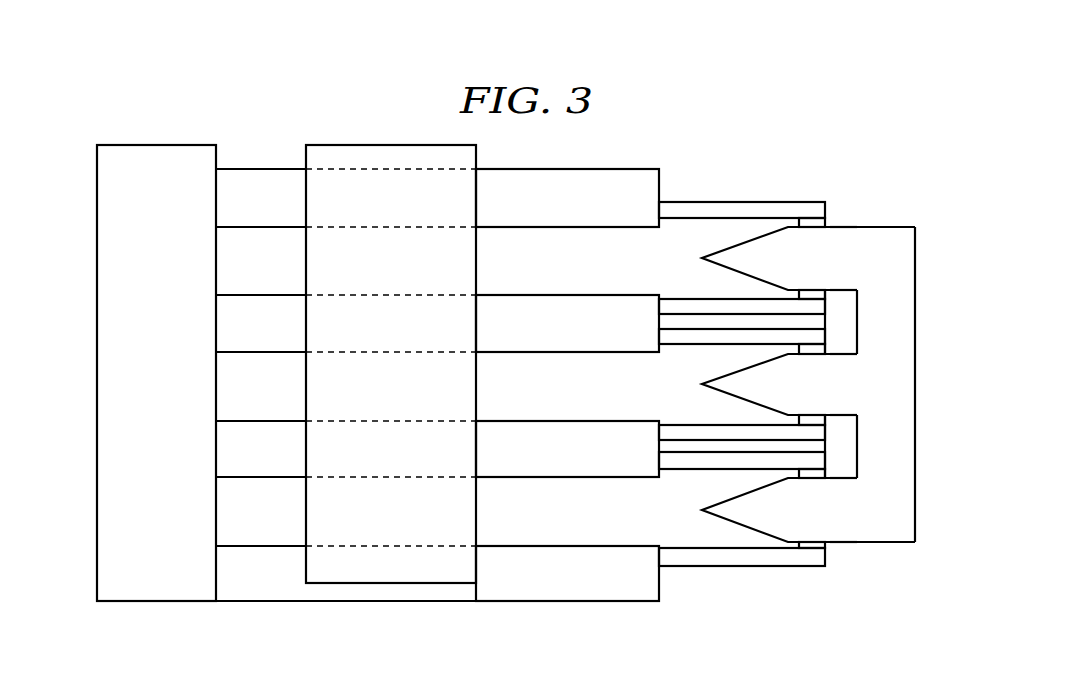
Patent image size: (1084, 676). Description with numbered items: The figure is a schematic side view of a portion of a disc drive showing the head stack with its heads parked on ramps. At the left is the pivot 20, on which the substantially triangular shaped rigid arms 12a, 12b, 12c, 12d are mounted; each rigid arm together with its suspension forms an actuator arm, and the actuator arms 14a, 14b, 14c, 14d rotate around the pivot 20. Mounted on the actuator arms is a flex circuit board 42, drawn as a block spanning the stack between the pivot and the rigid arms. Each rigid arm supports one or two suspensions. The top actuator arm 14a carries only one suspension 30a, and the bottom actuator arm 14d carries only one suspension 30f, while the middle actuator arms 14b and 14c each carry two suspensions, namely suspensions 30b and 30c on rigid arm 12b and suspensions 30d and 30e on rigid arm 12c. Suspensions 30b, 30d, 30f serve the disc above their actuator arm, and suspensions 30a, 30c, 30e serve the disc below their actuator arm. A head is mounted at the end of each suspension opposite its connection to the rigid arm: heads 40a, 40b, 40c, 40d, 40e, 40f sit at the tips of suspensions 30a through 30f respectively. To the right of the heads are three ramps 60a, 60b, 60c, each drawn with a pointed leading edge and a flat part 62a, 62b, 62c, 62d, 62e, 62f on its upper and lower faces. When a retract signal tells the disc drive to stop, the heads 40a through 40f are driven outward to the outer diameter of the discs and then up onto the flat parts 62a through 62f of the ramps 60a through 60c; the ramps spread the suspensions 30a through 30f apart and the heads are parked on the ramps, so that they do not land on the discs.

The pivot 20 is at (172, 388).
The flex circuit board 42 is at (405, 271).
The rigid arm 12a is at (553, 208).
The rigid arm 12b is at (553, 336).
The rigid arm 12c is at (553, 461).
The rigid arm 12d is at (553, 586).
The actuator arm 14a is at (618, 169).
The actuator arm 14b is at (510, 295).
The actuator arm 14c is at (512, 421).
The actuator arm 14d is at (618, 601).
The suspension 30a is at (707, 206).
The suspension 30b is at (687, 302).
The suspension 30c is at (728, 338).
The suspension 30d is at (728, 430).
The suspension 30e is at (687, 466).
The suspension 30f is at (707, 559).
The head 40a is at (827, 223).
The head 40b is at (828, 293).
The head 40c is at (828, 350).
The head 40d is at (828, 419).
The head 40e is at (828, 474).
The head 40f is at (827, 547).
The ramp 60a is at (830, 271).
The ramp 60b is at (830, 396).
The ramp 60c is at (830, 523).
The flat part 62a is at (843, 228).
The flat part 62b is at (843, 290).
The flat part 62c is at (843, 354).
The flat part 62d is at (843, 415).
The flat part 62e is at (843, 479).
The flat part 62f is at (843, 541).